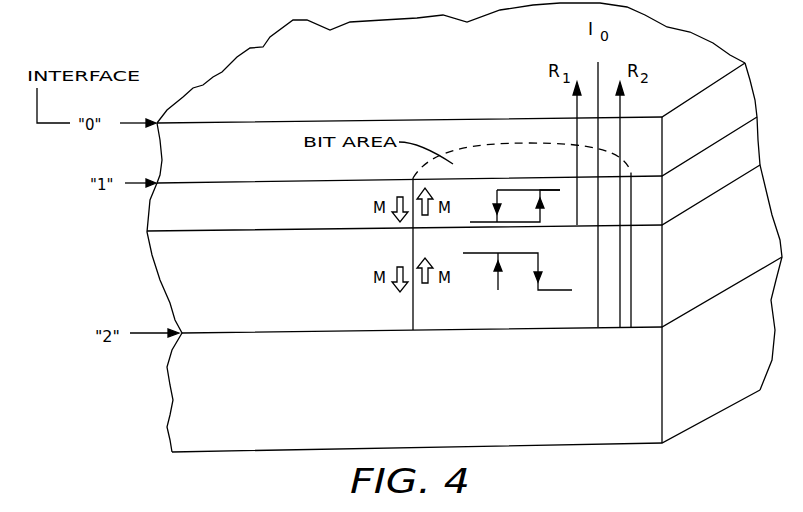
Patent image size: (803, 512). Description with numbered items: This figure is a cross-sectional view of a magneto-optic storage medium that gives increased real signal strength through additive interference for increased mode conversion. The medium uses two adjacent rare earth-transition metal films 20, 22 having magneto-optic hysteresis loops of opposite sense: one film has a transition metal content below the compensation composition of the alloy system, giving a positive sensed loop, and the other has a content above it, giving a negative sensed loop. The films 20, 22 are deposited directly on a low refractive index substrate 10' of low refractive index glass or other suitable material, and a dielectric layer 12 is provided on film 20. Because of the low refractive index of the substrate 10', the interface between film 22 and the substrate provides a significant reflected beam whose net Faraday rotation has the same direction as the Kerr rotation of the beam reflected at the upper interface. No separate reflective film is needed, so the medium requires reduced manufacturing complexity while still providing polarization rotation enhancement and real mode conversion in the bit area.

The dielectric layer 12 is at (659, 147).
The rare earth-transition metal film 20 is at (655, 200).
The rare earth-transition metal film 22 is at (655, 273).
The low refractive index substrate 10' is at (466, 389).